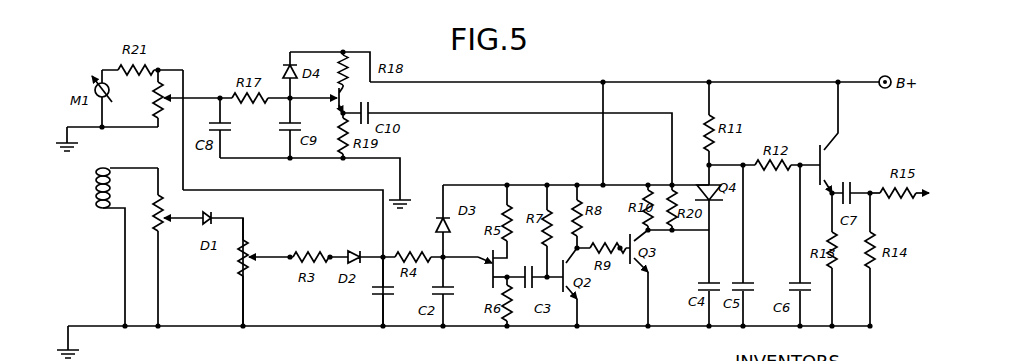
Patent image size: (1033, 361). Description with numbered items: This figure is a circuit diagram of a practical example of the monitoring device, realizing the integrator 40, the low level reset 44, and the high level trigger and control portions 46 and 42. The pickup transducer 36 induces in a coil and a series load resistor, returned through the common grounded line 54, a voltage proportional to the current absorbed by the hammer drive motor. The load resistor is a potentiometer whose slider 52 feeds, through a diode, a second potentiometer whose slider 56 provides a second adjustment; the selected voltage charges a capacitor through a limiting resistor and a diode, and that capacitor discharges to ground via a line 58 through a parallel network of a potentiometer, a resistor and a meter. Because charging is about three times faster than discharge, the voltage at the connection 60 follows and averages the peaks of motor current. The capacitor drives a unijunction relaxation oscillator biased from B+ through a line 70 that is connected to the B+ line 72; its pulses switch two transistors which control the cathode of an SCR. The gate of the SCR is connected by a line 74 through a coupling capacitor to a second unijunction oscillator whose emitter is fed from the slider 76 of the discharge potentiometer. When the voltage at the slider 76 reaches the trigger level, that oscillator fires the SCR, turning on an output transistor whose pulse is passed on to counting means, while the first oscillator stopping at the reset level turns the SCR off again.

The pickup transducer 36 is at (100, 210).
The integrator 40 is at (370, 289).
The control portion 42 is at (806, 140).
The low level reset 44 is at (480, 294).
The high level trigger 46 is at (336, 60).
The slider 52 is at (168, 216).
The common grounded line 54 is at (205, 327).
The slider 56 is at (252, 253).
The line 58 is at (294, 190).
The connection 60 is at (388, 254).
The line 70 is at (528, 185).
The B+ line 72 is at (642, 82).
The line 74 is at (482, 116).
The slider 76 is at (170, 95).